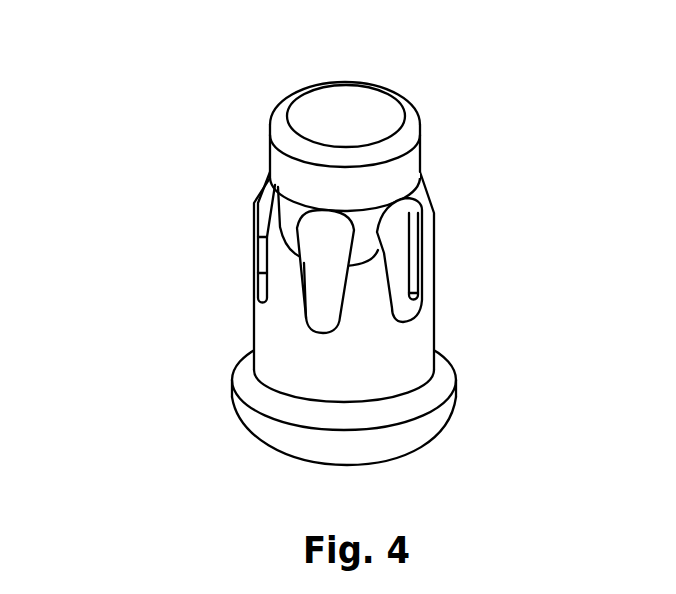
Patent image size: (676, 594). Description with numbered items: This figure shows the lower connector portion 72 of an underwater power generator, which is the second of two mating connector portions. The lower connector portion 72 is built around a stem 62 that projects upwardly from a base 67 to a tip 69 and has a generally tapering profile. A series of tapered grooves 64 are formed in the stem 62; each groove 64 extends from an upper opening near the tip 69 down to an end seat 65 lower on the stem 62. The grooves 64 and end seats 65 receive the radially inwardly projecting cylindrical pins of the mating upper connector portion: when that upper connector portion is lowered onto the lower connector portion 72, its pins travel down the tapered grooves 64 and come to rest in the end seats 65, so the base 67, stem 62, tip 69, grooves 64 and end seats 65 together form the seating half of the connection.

The lower connector portion 72 is at (140, 105).
The tip 69 is at (432, 88).
The tapered grooves 64 is at (402, 250).
The end seat 65 is at (298, 327).
The stem 62 is at (422, 333).
The base 67 is at (198, 420).